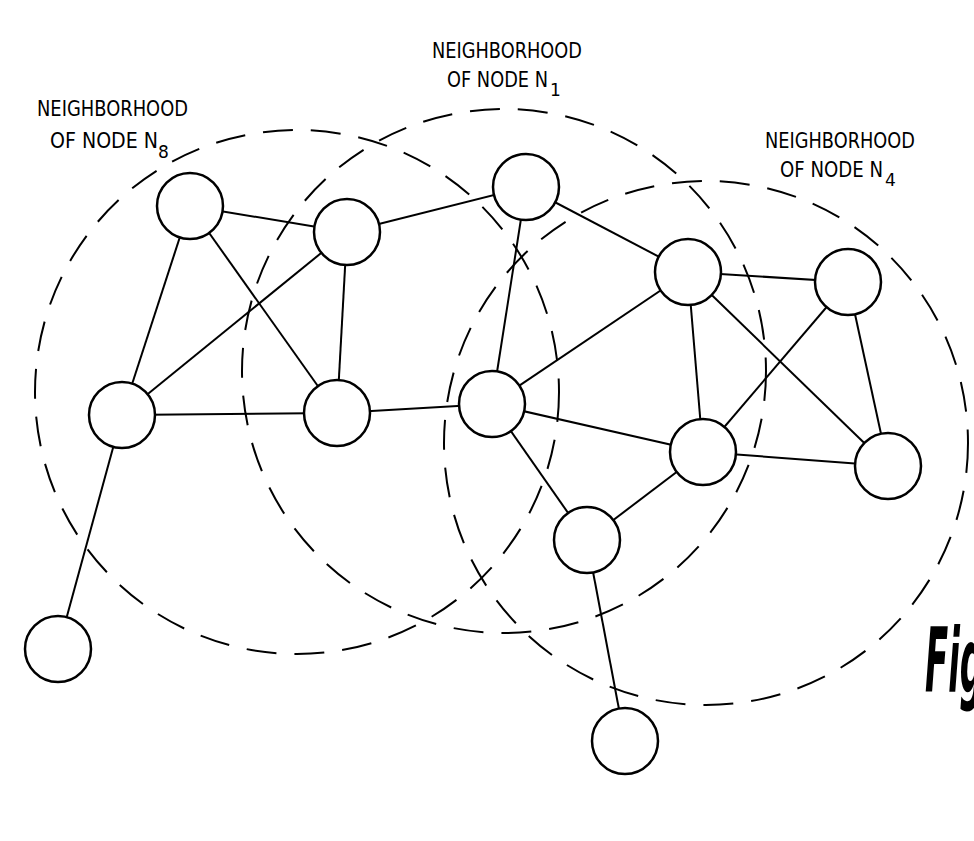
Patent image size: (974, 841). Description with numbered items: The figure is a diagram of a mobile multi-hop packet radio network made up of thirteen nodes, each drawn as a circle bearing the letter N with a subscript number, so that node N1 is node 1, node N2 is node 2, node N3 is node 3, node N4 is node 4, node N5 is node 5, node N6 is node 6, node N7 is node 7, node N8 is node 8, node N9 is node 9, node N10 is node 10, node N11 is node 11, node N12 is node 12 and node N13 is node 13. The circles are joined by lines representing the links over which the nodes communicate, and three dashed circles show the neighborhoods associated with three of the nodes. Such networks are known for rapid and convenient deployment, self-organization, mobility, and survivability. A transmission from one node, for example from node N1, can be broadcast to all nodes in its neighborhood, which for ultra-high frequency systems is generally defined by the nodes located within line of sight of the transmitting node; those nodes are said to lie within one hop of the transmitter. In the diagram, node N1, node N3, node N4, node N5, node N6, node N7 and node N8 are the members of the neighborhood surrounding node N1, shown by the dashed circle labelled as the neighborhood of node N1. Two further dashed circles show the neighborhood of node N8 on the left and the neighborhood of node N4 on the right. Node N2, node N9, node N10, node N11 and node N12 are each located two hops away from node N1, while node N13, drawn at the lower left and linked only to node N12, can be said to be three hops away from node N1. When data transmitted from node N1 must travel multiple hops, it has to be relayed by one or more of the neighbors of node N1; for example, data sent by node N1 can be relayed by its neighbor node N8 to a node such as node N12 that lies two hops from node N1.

The node N1 is at (492, 404).
The node N2 is at (625, 741).
The node N3 is at (587, 540).
The node N4 is at (703, 452).
The node N5 is at (688, 272).
The node N6 is at (526, 187).
The node N7 is at (347, 232).
The node N8 is at (337, 413).
The node N9 is at (888, 466).
The node N10 is at (848, 282).
The node N11 is at (190, 206).
The node N12 is at (122, 415).
The node N13 is at (58, 649).
The node N1 1 is at (492, 404).
The node N2 2 is at (625, 741).
The node N3 3 is at (587, 540).
The node N4 4 is at (703, 452).
The node N5 5 is at (688, 272).
The node N6 6 is at (526, 187).
The node N7 7 is at (347, 232).
The node N8 8 is at (337, 413).
The node N9 9 is at (888, 466).
The node N10 10 is at (848, 282).
The node N11 11 is at (190, 206).
The node N12 12 is at (122, 415).
The node N13 13 is at (58, 649).